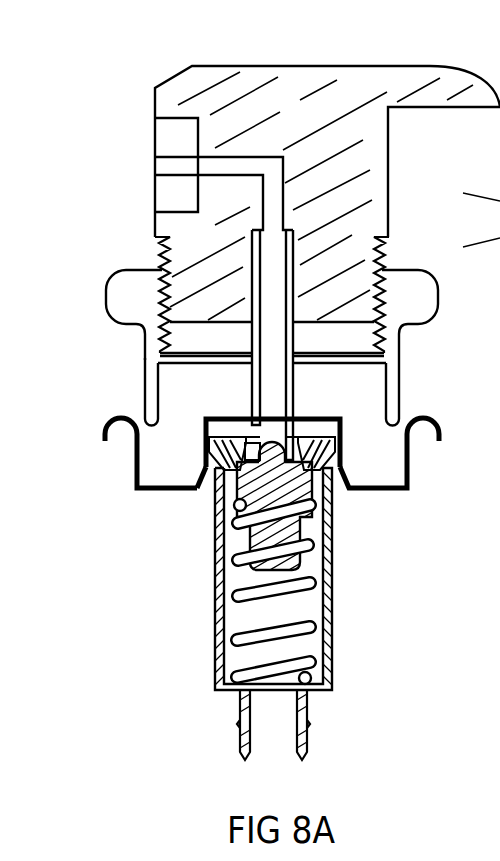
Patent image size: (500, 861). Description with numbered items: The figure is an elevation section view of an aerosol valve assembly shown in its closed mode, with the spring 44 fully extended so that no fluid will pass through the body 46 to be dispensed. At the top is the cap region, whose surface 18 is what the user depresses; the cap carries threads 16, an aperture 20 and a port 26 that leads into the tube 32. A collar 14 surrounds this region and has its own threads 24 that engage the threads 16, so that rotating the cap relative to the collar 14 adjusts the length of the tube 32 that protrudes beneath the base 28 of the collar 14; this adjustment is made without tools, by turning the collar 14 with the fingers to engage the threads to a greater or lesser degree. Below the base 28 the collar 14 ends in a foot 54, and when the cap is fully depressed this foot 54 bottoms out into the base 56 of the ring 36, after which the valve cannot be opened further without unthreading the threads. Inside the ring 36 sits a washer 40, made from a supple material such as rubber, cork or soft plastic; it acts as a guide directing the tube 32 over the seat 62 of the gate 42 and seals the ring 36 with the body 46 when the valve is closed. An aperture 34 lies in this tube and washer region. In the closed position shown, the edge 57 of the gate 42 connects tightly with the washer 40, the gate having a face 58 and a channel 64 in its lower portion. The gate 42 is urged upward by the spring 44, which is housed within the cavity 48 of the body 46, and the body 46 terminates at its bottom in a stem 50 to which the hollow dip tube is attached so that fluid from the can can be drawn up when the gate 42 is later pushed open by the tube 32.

The collar 14 is at (106, 296).
The threads 16 is at (160, 251).
The surface 18 is at (407, 63).
The aperture 20 is at (155, 168).
The threads 24 is at (160, 338).
The port 26 is at (235, 163).
The base 28 is at (188, 364).
The tube 32 is at (253, 248).
The aperture 34 is at (218, 448).
The ring 36 is at (413, 479).
The washer 40 is at (215, 424).
The gate 42 is at (353, 512).
The spring 44 is at (248, 591).
The body 46 is at (335, 556).
The cavity 48 is at (237, 585).
The stem 50 is at (310, 731).
The foot 54 is at (155, 415).
The base 56 is at (157, 480).
The edge 57 is at (297, 440).
The face 58 is at (240, 517).
The seat 62 is at (315, 460).
The channel 64 is at (236, 500).